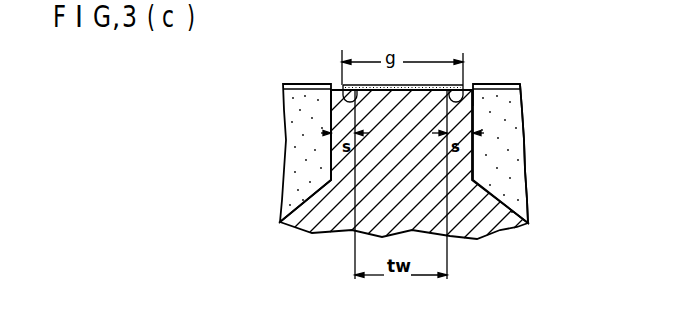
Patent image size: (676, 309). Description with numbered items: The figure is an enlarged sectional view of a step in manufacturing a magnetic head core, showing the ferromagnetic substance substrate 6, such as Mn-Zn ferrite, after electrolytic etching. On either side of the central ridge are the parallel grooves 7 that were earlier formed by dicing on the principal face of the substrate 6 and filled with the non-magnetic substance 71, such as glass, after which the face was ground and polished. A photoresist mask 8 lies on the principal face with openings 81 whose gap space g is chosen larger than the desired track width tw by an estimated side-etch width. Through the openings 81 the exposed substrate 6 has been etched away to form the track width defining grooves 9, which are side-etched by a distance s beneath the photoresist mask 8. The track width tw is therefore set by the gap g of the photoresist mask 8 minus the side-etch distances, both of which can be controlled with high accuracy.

The ferromagnetic substance substrate 6 is at (332, 224).
The parallel grooves 7 is at (515, 180).
The non-magnetic substance 71 is at (290, 118).
The photoresist mask 8 is at (420, 87).
The openings 81 is at (349, 96).
The track width defining grooves 9 is at (343, 97).